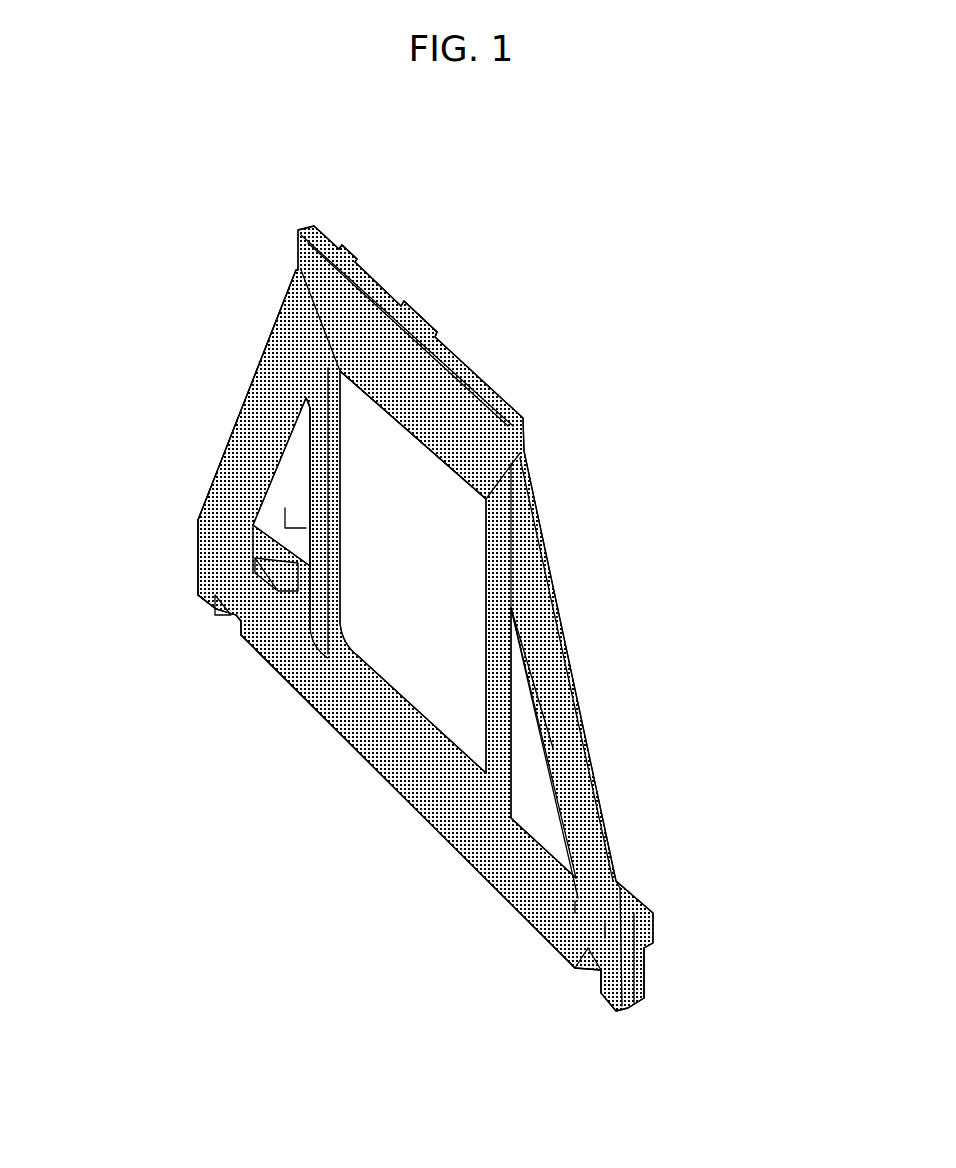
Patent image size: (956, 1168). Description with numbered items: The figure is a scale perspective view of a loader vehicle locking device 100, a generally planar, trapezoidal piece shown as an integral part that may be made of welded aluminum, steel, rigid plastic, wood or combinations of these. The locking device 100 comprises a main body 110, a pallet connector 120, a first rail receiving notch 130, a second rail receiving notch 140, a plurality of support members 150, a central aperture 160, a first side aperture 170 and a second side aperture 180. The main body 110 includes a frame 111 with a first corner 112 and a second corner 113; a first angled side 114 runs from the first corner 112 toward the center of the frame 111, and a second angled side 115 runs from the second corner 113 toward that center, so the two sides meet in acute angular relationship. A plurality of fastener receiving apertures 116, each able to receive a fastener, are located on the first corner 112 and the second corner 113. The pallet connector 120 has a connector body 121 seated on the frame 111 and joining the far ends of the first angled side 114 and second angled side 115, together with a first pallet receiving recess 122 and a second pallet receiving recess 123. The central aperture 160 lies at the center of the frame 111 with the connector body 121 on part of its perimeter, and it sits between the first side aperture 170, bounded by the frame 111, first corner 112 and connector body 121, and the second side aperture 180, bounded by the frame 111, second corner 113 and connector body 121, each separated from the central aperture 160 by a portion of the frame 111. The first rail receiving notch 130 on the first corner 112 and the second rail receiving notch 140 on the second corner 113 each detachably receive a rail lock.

The locking device 100 is at (588, 236).
The main body 110 is at (243, 661).
The frame 111 is at (492, 636).
The first corner 112 is at (190, 508).
The second corner 113 is at (607, 988).
The first angled side 114 is at (256, 350).
The second angled side 115 is at (540, 578).
The fastener receiving apertures 116 is at (233, 554).
The pallet connector 120 is at (545, 396).
The connector body 121 is at (347, 319).
The first pallet receiving recess 122 is at (356, 281).
The second pallet receiving recess 123 is at (455, 365).
The first rail receiving notch 130 is at (220, 608).
The second rail receiving notch 140 is at (577, 972).
The support members 150 is at (278, 494).
The central aperture 160 is at (445, 678).
The first side aperture 170 is at (284, 449).
The second side aperture 180 is at (543, 760).